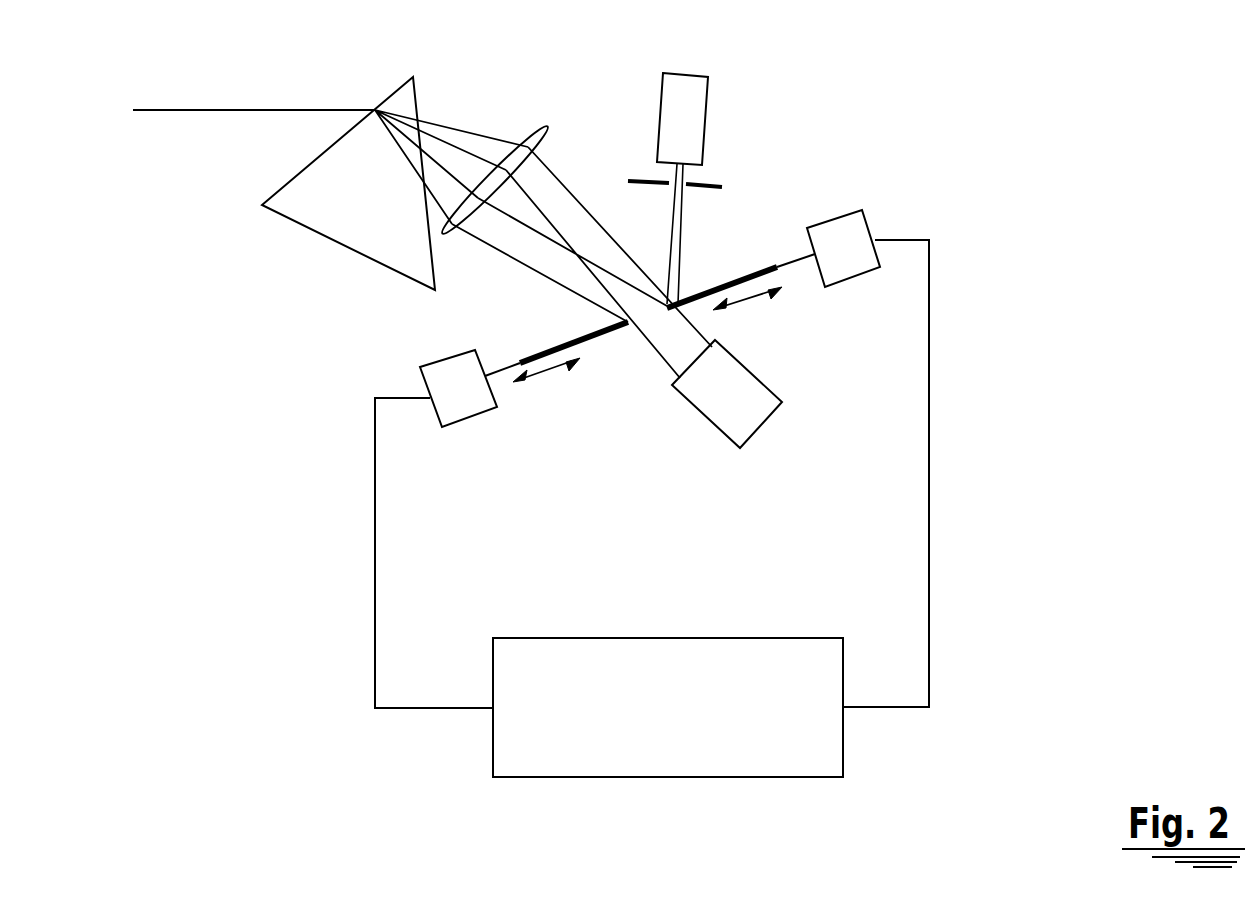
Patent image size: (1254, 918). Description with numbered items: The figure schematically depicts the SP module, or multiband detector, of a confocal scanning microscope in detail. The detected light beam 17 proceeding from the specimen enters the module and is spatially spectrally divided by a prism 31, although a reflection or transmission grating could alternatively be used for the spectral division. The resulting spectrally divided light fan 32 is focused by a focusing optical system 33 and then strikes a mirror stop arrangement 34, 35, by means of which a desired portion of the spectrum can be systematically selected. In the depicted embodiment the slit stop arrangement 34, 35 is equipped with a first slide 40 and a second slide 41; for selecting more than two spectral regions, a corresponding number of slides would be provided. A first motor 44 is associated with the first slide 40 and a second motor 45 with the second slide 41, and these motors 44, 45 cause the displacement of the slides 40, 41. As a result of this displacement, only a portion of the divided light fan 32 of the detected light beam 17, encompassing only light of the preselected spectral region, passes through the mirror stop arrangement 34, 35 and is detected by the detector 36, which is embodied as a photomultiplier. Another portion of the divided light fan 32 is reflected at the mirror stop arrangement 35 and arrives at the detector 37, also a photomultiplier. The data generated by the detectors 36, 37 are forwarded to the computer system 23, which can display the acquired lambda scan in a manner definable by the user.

The detected light beam 17 is at (218, 110).
The computer system 23 is at (674, 715).
The prism 31 is at (352, 237).
The spectrally divided light fan 32 is at (447, 132).
The focusing optical system 33 is at (538, 128).
The mirror stop arrangement (first part) 34 is at (535, 358).
The mirror stop arrangement (second part) 35 is at (720, 285).
The detector 36 is at (722, 417).
The detector 37 is at (692, 118).
The first slide 40 is at (607, 333).
The second slide 41 is at (695, 312).
The first motor 44 is at (435, 377).
The second motor 45 is at (850, 223).